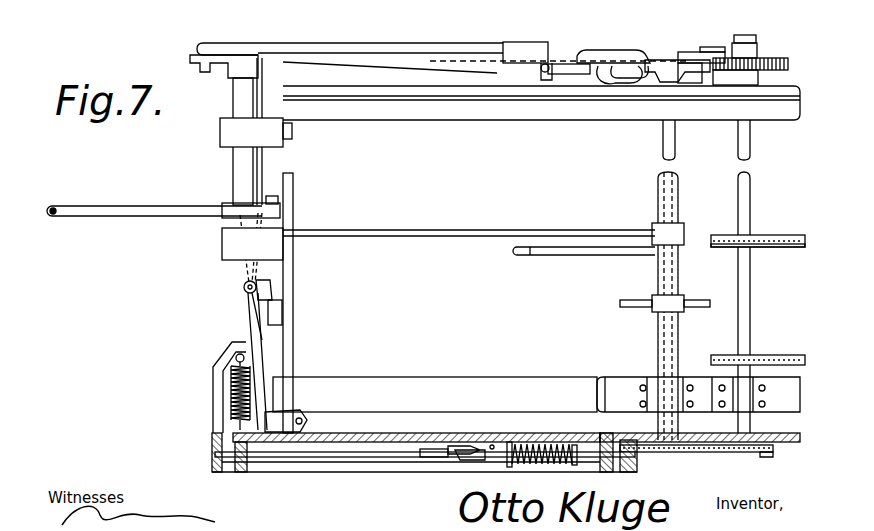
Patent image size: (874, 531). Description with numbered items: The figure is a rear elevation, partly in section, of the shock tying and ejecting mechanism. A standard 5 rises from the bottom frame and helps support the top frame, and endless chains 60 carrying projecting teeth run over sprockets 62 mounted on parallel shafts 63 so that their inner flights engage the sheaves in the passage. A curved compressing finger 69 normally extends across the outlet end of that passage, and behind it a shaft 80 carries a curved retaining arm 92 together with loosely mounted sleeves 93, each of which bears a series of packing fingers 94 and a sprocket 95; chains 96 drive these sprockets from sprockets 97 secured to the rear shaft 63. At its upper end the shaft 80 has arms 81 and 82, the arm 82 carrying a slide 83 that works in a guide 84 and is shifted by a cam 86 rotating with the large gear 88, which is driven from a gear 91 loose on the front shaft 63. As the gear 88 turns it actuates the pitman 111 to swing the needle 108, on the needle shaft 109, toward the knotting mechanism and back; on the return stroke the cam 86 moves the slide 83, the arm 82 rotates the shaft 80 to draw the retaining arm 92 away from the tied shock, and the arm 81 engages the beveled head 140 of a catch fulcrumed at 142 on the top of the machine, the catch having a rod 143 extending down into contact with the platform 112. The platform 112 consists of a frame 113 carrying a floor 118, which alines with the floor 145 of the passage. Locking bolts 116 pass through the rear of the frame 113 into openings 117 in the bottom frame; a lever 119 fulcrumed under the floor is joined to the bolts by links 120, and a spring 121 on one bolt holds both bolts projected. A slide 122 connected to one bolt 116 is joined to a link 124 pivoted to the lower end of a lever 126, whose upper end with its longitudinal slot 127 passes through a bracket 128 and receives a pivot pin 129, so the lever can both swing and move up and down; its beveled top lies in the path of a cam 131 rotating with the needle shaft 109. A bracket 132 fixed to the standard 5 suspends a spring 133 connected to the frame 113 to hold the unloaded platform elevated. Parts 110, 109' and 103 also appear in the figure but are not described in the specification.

The standard 5 is at (296, 306).
The endless chains 60 is at (767, 236).
The sprockets 62 is at (728, 248).
The shafts 63 is at (750, 264).
The curved compressing finger 69 is at (566, 256).
The shaft 80 is at (675, 140).
The arm 81 is at (712, 52).
The arm 82 is at (650, 68).
The slide 83 is at (600, 84).
The guide 84 is at (617, 88).
The cam 86 is at (572, 86).
The large gear 88 is at (556, 62).
The gear 91 is at (760, 62).
The curved retaining arm 92 is at (478, 238).
The sleeves 93 is at (676, 192).
The packing fingers 94 is at (633, 304).
The sprocket 95 is at (687, 443).
The chains 96 is at (700, 452).
The sprockets 97 is at (765, 458).
The bracket 103 is at (712, 76).
The needle 108 is at (146, 212).
The needle shaft 109 is at (216, 141).
The clamp blocks 109' is at (253, 202).
The hook bracket 110 is at (225, 58).
The pitman 111 is at (428, 52).
The platform 112 is at (355, 474).
The platform frame 113 is at (242, 472).
The locking bolts 116 is at (590, 448).
The openings 117 is at (627, 438).
The floor 118 is at (520, 433).
The lever 119 is at (432, 458).
The links 120 is at (460, 440).
The spring 121 is at (543, 443).
The slide 122 is at (375, 433).
The link 124 is at (290, 418).
The lever 126 is at (265, 362).
The longitudinal slot 127 is at (244, 284).
The bracket 128 is at (258, 286).
The pivot pin 129 is at (246, 297).
The cam 131 is at (280, 210).
The bracket 132 is at (214, 380).
The spring 133 is at (230, 396).
The beveled head 140 is at (690, 76).
The catch fulcrum 142 is at (545, 73).
The rod 143 is at (262, 90).
The passage floor 145 is at (723, 431).